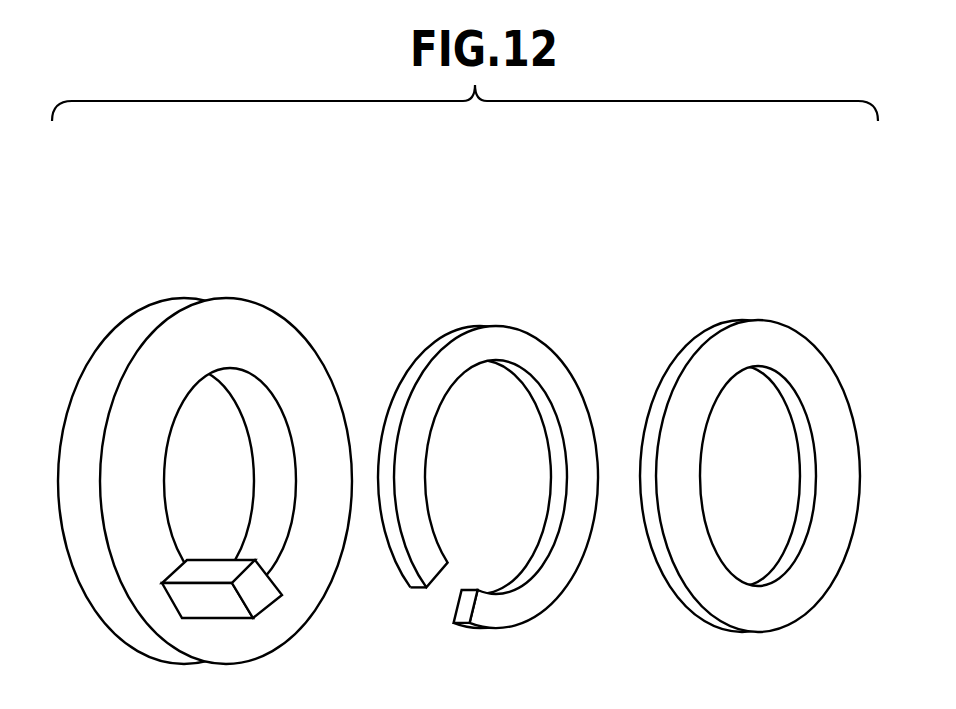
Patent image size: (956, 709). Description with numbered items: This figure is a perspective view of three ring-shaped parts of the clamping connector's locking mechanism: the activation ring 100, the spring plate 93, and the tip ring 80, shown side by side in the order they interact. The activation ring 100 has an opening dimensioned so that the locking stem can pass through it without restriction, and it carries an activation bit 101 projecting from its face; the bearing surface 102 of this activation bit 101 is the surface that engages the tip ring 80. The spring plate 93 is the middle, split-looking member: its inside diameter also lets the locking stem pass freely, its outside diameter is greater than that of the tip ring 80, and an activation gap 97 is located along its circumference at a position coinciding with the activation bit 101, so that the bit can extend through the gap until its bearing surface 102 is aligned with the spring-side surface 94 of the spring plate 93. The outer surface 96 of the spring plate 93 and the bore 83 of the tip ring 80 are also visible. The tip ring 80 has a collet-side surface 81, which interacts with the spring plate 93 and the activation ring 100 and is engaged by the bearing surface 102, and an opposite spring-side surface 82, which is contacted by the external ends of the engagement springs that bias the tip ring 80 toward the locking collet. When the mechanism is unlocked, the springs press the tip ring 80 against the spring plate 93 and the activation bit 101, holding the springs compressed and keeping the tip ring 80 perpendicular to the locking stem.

The activation ring 100 is at (211, 270).
The activation bit 101 is at (200, 602).
The bearing surface 102 is at (258, 598).
The spring plate 93 is at (485, 423).
The spring-side surface 94 is at (425, 418).
The outer surface of split ring 96 is at (398, 397).
The activation gap 97 is at (452, 593).
The tip ring 80 is at (740, 400).
The collet-side surface 81 is at (657, 388).
The spring-side surface 82 is at (683, 428).
The bore of retaining ring 83 is at (810, 465).